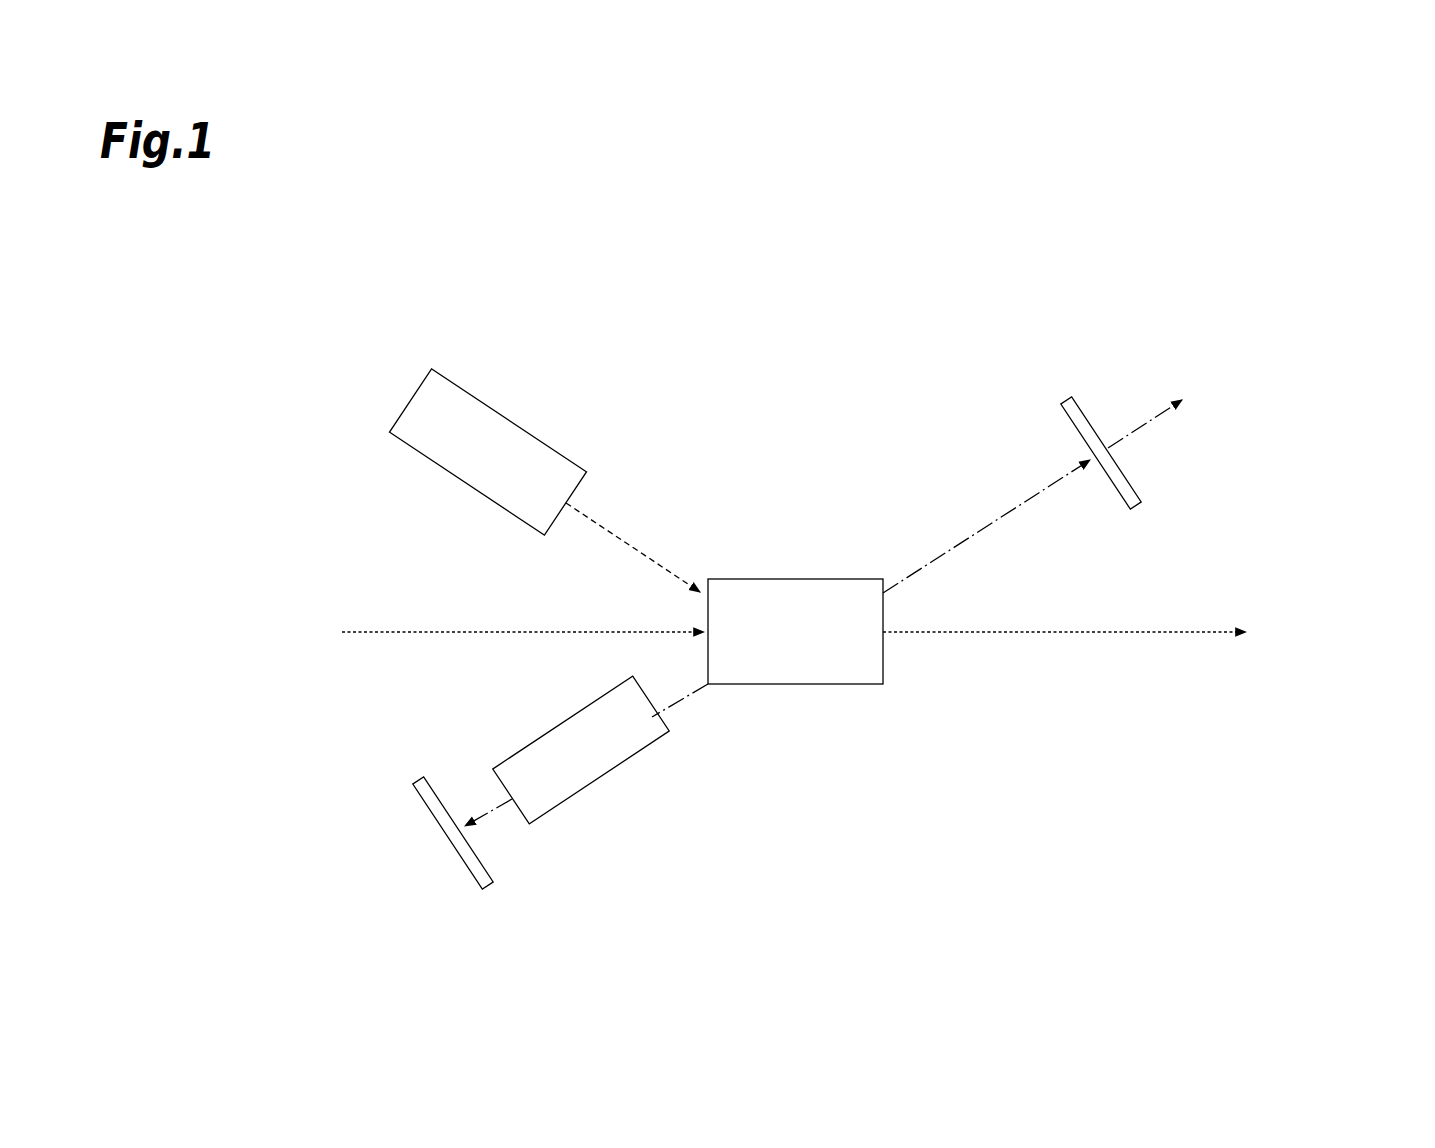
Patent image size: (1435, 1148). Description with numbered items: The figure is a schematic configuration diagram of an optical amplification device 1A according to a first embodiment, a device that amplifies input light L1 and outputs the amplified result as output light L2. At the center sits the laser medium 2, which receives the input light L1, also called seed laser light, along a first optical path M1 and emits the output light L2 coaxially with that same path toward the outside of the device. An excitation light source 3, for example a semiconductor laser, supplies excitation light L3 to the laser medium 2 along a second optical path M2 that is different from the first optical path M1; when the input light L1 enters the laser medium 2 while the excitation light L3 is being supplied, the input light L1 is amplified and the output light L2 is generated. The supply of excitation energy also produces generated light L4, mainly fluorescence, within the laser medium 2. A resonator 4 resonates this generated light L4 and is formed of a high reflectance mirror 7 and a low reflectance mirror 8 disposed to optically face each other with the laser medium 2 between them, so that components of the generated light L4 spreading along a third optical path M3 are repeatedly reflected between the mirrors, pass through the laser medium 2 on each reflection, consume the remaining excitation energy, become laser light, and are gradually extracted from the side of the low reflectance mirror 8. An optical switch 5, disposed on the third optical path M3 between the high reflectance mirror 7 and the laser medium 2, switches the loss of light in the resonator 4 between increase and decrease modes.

The optical amplification device 1A is at (328, 308).
The laser medium 2 is at (795, 578).
The excitation light source 3 is at (510, 420).
The resonator 4 is at (468, 905).
The optical switch 5 is at (604, 774).
The high reflectance mirror 7 is at (436, 821).
The low reflectance mirror 8 is at (1098, 422).
The input light L1 is at (452, 631).
The output light L2 is at (1106, 631).
The excitation light L3 is at (641, 548).
The generated light L4 is at (1024, 502).
The first optical path M1 is at (414, 640).
The second optical path M2 is at (608, 548).
The third optical path M3 is at (940, 546).